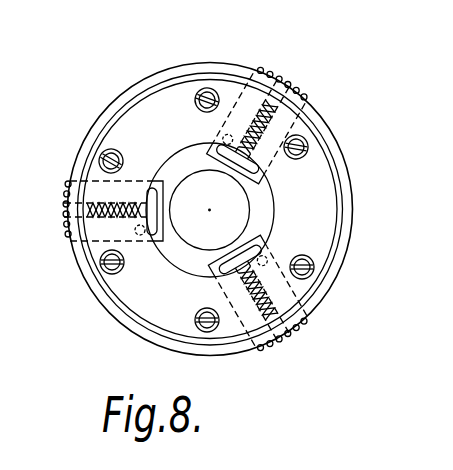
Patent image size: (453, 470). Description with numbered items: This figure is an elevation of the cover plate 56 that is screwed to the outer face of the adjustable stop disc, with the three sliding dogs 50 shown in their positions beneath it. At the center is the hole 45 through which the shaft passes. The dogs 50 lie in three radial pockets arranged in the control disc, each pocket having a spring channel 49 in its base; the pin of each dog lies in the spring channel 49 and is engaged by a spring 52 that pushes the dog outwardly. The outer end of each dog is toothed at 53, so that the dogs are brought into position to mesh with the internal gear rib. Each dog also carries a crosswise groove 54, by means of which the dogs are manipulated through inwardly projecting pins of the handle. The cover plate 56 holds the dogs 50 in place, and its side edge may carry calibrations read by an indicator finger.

The hole 45 is at (249, 212).
The spring channel 49 is at (261, 71).
The sliding dog 50 is at (317, 133).
The spring 52 is at (310, 103).
The toothed outer end 53 is at (283, 78).
The crosswise groove 54 is at (212, 143).
The cover plate 56 is at (332, 167).